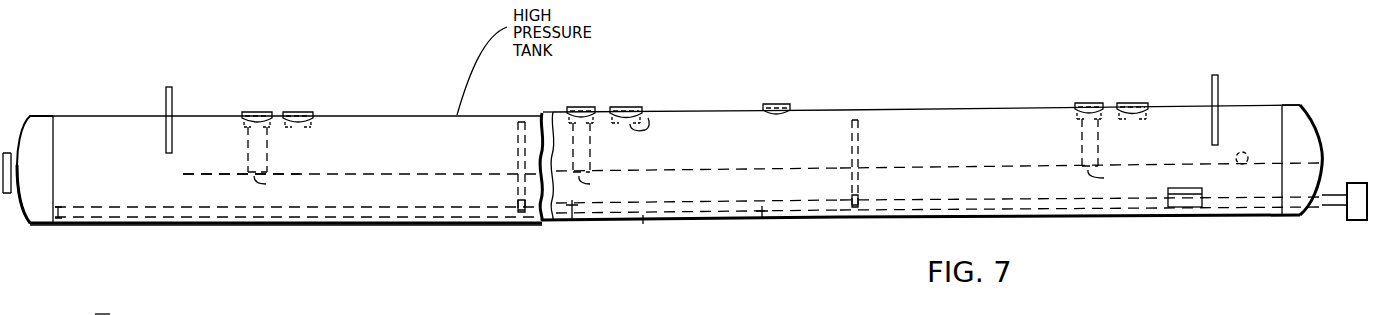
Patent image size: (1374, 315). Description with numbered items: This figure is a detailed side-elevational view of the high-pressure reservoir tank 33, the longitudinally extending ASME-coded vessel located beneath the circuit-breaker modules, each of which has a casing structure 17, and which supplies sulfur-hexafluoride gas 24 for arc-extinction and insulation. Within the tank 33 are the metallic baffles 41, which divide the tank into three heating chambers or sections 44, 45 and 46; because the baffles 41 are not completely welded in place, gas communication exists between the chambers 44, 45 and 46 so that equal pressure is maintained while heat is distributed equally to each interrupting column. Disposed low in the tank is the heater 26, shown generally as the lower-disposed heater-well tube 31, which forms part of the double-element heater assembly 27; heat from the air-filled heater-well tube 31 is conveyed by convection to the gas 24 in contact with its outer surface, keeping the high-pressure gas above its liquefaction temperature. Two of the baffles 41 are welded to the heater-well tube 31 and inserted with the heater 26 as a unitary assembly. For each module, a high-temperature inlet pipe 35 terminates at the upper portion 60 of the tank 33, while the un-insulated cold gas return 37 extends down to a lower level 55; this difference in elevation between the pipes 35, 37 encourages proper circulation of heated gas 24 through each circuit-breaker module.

The casing structure 17 is at (90, 314).
The sulfur-hexafluoride gas 24 is at (1011, 133).
The heater 26 is at (572, 221).
The double-element heater assembly 27 is at (762, 215).
The heater-well tube 31 is at (643, 226).
The high-pressure reservoir tank 33 is at (262, 225).
The high-temperature inlet pipe 35 is at (300, 127).
The cold gas return 37 is at (248, 153).
The baffle 41 is at (496, 150).
The section 44 is at (376, 158).
The section 45 is at (666, 150).
The section 46 is at (933, 152).
The lower level 55 is at (391, 172).
The upper portion 60 is at (483, 118).